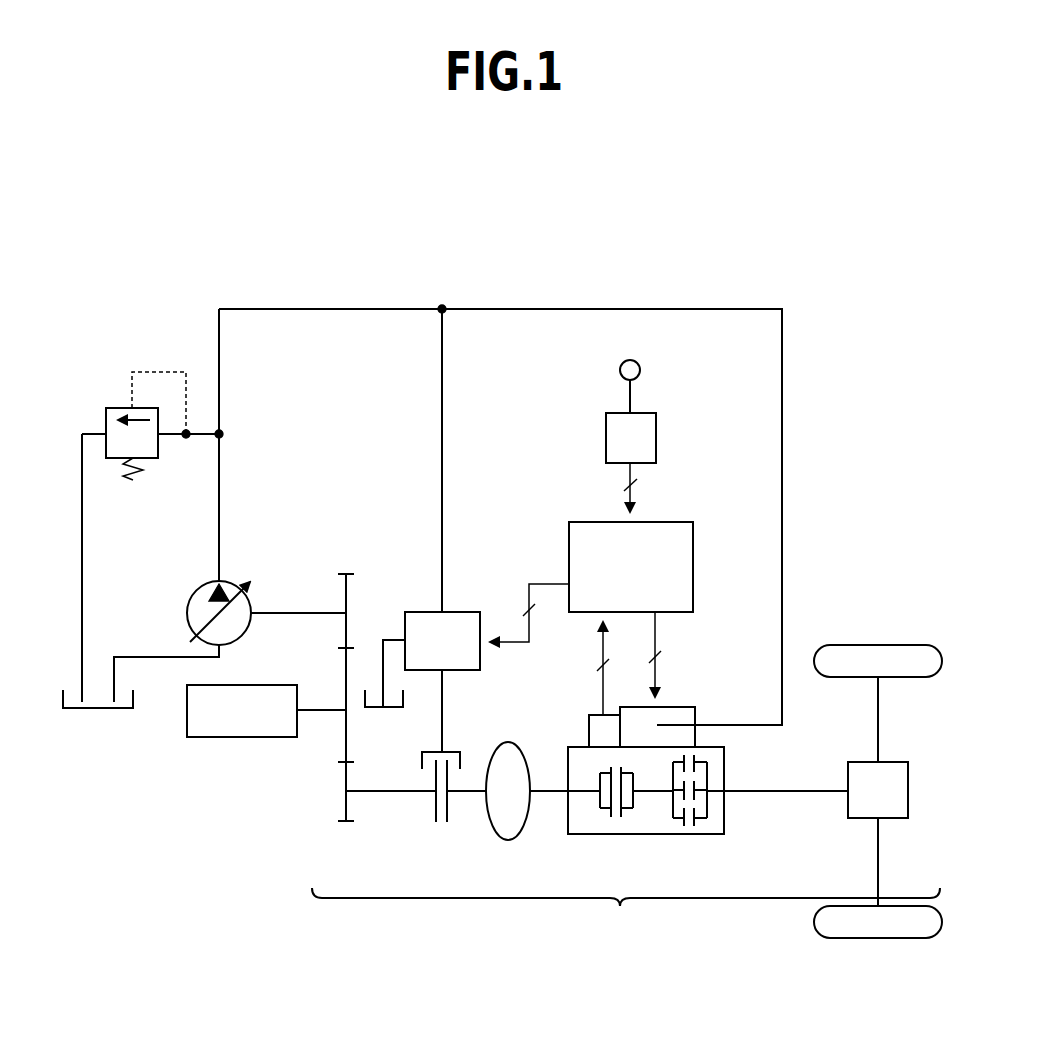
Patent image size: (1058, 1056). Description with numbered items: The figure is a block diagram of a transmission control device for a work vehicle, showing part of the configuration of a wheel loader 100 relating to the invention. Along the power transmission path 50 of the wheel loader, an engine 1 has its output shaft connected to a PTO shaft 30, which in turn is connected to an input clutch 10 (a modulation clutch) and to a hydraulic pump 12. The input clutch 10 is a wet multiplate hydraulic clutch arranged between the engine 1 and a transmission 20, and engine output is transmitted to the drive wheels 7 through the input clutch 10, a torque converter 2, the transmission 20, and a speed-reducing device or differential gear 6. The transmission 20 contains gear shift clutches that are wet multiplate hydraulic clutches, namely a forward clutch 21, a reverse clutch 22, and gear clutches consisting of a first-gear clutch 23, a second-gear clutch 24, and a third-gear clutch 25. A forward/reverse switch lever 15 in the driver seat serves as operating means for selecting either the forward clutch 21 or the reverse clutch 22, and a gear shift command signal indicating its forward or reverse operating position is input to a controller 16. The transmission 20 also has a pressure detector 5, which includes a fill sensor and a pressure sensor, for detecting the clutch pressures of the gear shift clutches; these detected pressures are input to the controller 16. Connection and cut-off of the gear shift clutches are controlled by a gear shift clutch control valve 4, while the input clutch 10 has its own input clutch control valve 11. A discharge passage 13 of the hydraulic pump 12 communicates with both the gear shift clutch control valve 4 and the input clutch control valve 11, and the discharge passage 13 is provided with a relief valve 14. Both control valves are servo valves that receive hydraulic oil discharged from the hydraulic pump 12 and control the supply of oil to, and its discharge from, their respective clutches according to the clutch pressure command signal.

The wheel loader 100 is at (646, 282).
The engine 1 is at (242, 737).
The torque converter 2 is at (510, 840).
The gear shift clutch control valve 4 is at (682, 707).
The pressure detector 5 is at (589, 722).
The speed-reducing device (differential gear) 6 is at (848, 810).
The drive wheels 7 is at (850, 645).
The input clutch (modulation clutch) 10 is at (436, 812).
The input clutch control valve 11 is at (410, 612).
The hydraulic pump 12 is at (231, 582).
The discharge passage 13 is at (219, 378).
The relief valve 14 is at (118, 408).
The forward/reverse switch lever 15 is at (606, 435).
The controller 16 is at (586, 522).
The transmission 20 is at (660, 834).
The forward clutch 21 is at (603, 772).
The reverse clutch 22 is at (610, 814).
The first-gear clutch 23 is at (692, 758).
The second-gear clutch 24 is at (692, 790).
The third-gear clutch 25 is at (695, 824).
The PTO shaft 30 is at (346, 594).
The power transmission path 50 is at (626, 913).